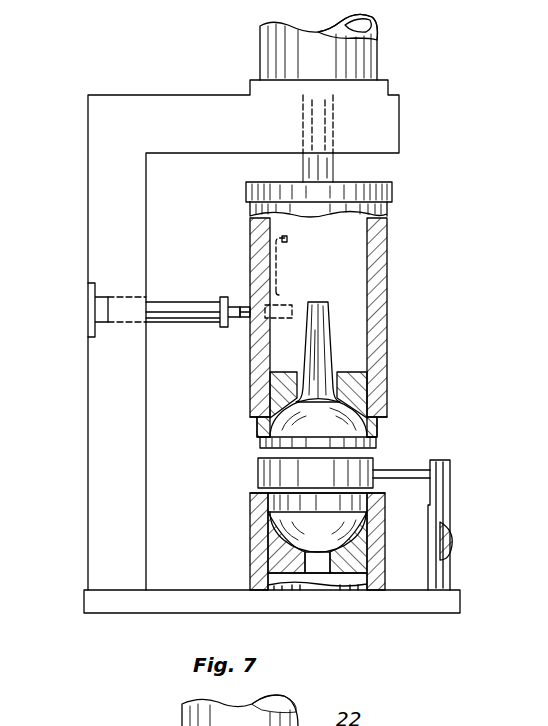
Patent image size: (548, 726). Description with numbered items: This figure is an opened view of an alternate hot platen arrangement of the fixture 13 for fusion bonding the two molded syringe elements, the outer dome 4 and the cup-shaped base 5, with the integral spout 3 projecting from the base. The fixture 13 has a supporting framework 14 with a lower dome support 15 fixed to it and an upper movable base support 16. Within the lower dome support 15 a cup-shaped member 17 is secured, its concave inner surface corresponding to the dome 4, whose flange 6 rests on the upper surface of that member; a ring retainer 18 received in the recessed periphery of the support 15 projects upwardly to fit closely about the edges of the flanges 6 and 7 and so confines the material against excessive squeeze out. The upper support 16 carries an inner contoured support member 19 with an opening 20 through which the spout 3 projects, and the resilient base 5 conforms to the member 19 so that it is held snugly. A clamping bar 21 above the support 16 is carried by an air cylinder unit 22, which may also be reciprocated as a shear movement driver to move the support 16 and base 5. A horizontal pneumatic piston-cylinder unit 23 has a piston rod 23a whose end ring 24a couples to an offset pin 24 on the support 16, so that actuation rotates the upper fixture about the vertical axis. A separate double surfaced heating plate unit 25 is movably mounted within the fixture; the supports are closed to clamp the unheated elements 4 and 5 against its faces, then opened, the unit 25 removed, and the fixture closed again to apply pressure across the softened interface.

The spout 3 is at (330, 318).
The dome 4 is at (324, 543).
The base 5 is at (324, 430).
The edge flange 6 is at (255, 504).
The edge flange 7 is at (260, 443).
The fixture 13 is at (448, 612).
The supporting framework 14 is at (92, 405).
The lower dome support 15 is at (385, 566).
The upper base support 16 is at (388, 278).
The cup-shaped member 17 is at (270, 553).
The ring retainer 18 is at (260, 514).
The contoured support member 19 is at (355, 403).
The opening 20 is at (332, 378).
The clamping bar 21 is at (392, 198).
The air cylinder unit 22 is at (378, 60).
The piston-cylinder unit 23 is at (188, 280).
The piston rod 23a is at (236, 320).
The pin 24 is at (285, 262).
The end ring 24a is at (292, 306).
The heating plate unit 25 is at (258, 470).